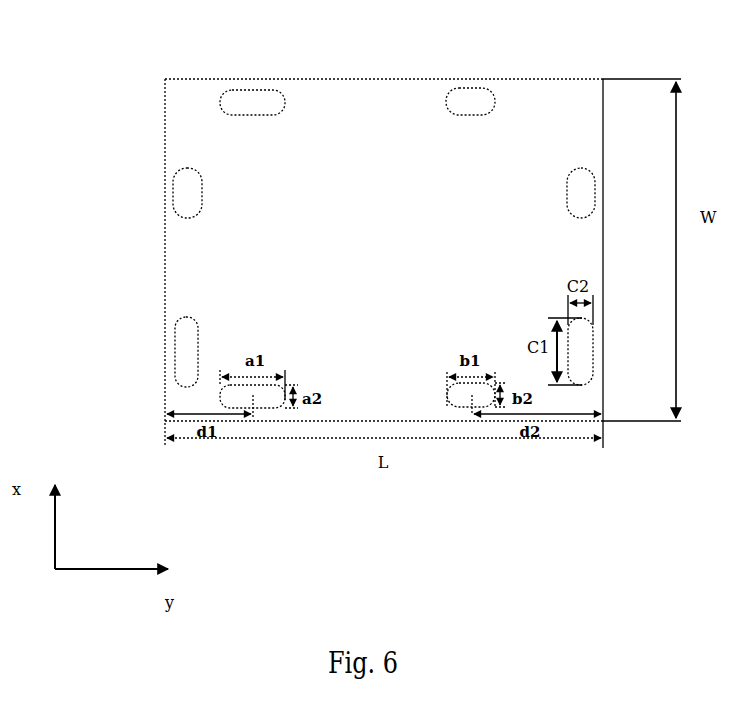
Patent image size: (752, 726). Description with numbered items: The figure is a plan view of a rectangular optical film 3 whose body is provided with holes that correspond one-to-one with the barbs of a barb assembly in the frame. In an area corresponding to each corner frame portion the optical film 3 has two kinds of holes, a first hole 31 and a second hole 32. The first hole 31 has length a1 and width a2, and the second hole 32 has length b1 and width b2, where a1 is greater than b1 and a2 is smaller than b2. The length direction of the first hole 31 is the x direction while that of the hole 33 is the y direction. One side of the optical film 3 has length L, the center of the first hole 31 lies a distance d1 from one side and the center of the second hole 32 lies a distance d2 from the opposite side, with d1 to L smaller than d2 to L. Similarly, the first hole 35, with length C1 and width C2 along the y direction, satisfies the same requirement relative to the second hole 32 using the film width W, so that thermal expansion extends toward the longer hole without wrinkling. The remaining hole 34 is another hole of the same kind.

The optical film 3 is at (540, 275).
The first hole 31 is at (280, 345).
The second hole 32 is at (481, 332).
The hole 33 is at (182, 350).
The fourth slot 34 is at (182, 192).
The first hole 35 is at (587, 357).